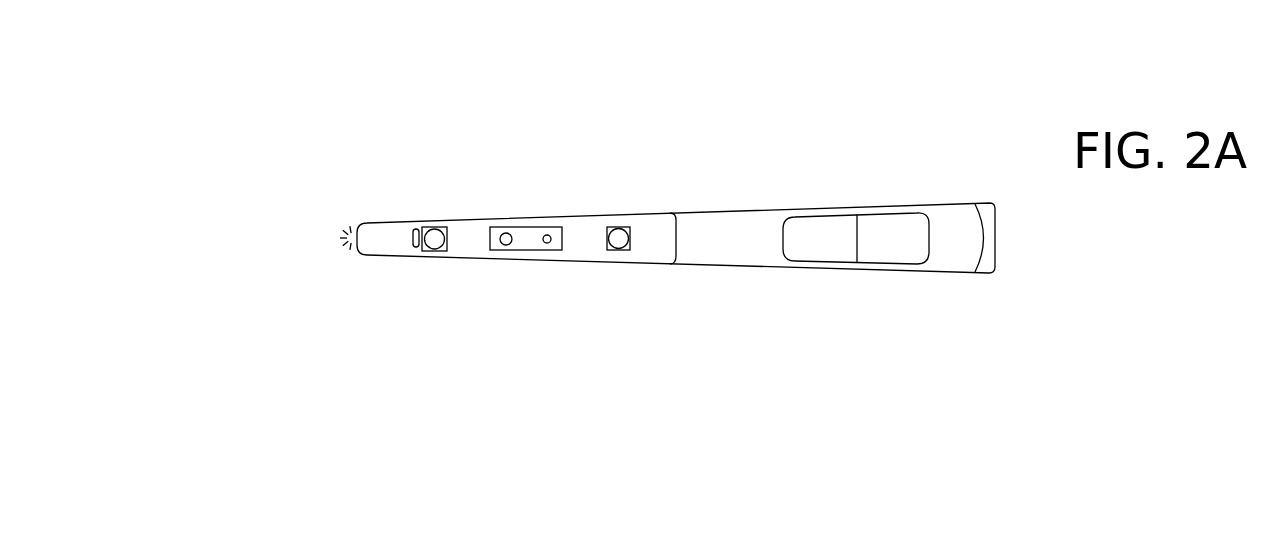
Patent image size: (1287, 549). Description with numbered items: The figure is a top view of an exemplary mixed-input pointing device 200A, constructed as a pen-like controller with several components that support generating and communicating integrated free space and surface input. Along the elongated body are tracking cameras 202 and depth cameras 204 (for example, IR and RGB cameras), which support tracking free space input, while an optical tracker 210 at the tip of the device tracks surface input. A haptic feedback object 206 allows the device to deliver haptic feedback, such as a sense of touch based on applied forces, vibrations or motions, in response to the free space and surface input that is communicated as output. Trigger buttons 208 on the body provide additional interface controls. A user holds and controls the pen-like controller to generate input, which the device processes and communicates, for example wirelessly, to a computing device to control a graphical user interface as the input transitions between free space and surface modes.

The mixed-input pointing device 200A is at (1140, 358).
The tracking cameras 202 is at (595, 215).
The depth cameras 204 is at (508, 266).
The haptic feedback object 206 is at (660, 257).
The trigger buttons 208 is at (904, 228).
The optical tracker 210 is at (339, 259).